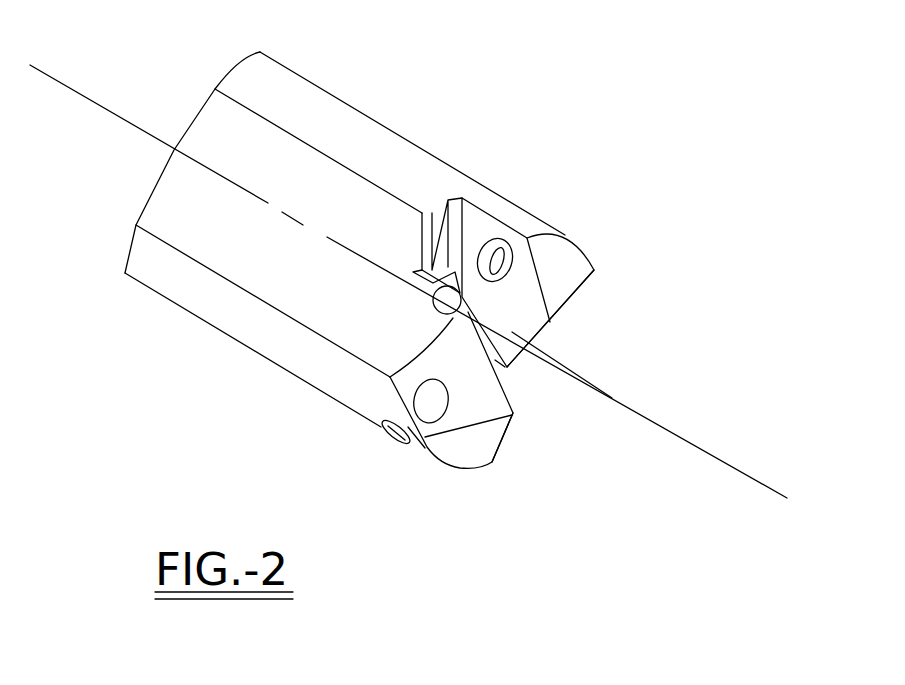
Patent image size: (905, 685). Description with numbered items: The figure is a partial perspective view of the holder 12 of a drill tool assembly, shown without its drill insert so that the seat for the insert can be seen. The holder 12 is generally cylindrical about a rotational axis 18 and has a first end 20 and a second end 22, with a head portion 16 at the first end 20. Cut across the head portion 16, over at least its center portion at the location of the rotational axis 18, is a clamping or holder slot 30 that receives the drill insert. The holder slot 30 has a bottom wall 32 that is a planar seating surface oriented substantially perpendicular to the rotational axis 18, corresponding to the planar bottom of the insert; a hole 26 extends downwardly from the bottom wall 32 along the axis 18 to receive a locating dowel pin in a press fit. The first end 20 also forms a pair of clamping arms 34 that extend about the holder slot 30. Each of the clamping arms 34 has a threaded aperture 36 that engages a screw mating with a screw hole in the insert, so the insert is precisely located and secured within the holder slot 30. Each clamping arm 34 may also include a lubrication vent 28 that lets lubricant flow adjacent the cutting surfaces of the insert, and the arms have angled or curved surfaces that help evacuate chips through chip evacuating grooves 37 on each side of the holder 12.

The holder 12 is at (283, 373).
The head portion 16 is at (527, 207).
The rotational axis 18 is at (80, 97).
The first end 20 is at (612, 398).
The second end 22 is at (158, 162).
The hole 26 is at (458, 306).
The lubrication vent 28 is at (428, 398).
The holder slot 30 is at (513, 391).
The bottom wall 32 is at (448, 200).
The clamping arms 34 is at (528, 359).
The apertures 36 is at (507, 280).
The chip evacuating grooves 37 is at (297, 287).